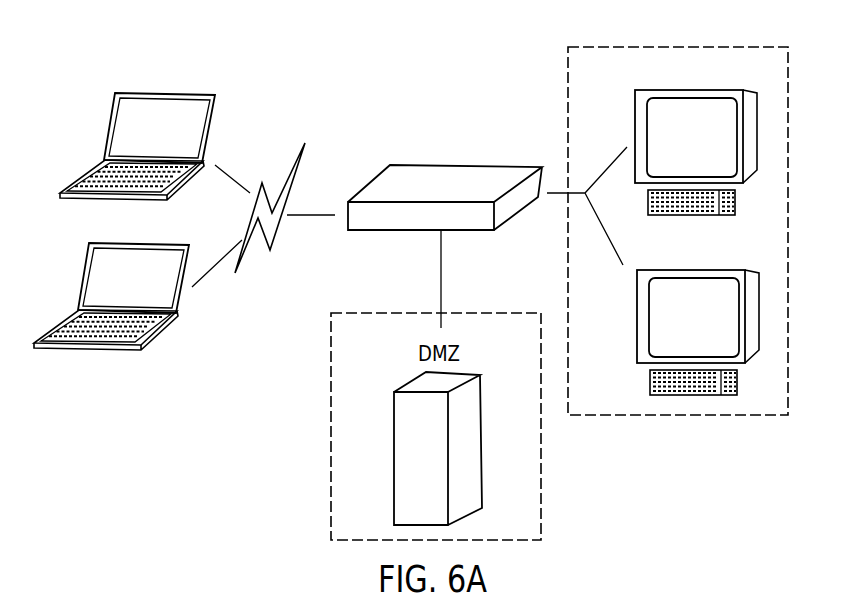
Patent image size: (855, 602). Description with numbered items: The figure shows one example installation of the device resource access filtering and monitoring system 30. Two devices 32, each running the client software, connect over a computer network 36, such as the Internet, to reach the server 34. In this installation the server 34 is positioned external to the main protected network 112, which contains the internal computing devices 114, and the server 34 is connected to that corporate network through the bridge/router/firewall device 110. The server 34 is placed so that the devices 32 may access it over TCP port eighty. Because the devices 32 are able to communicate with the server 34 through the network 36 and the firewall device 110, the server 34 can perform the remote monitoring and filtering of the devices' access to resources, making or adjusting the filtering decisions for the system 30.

The device resource access filtering and monitoring system 30 is at (350, 67).
The device 32 is at (122, 140).
The server 34 is at (400, 417).
The computer network 36 is at (297, 168).
The bridge/router/firewall device 110 is at (455, 194).
The main protected network 112 is at (755, 79).
The internal computing devices 114 is at (655, 137).